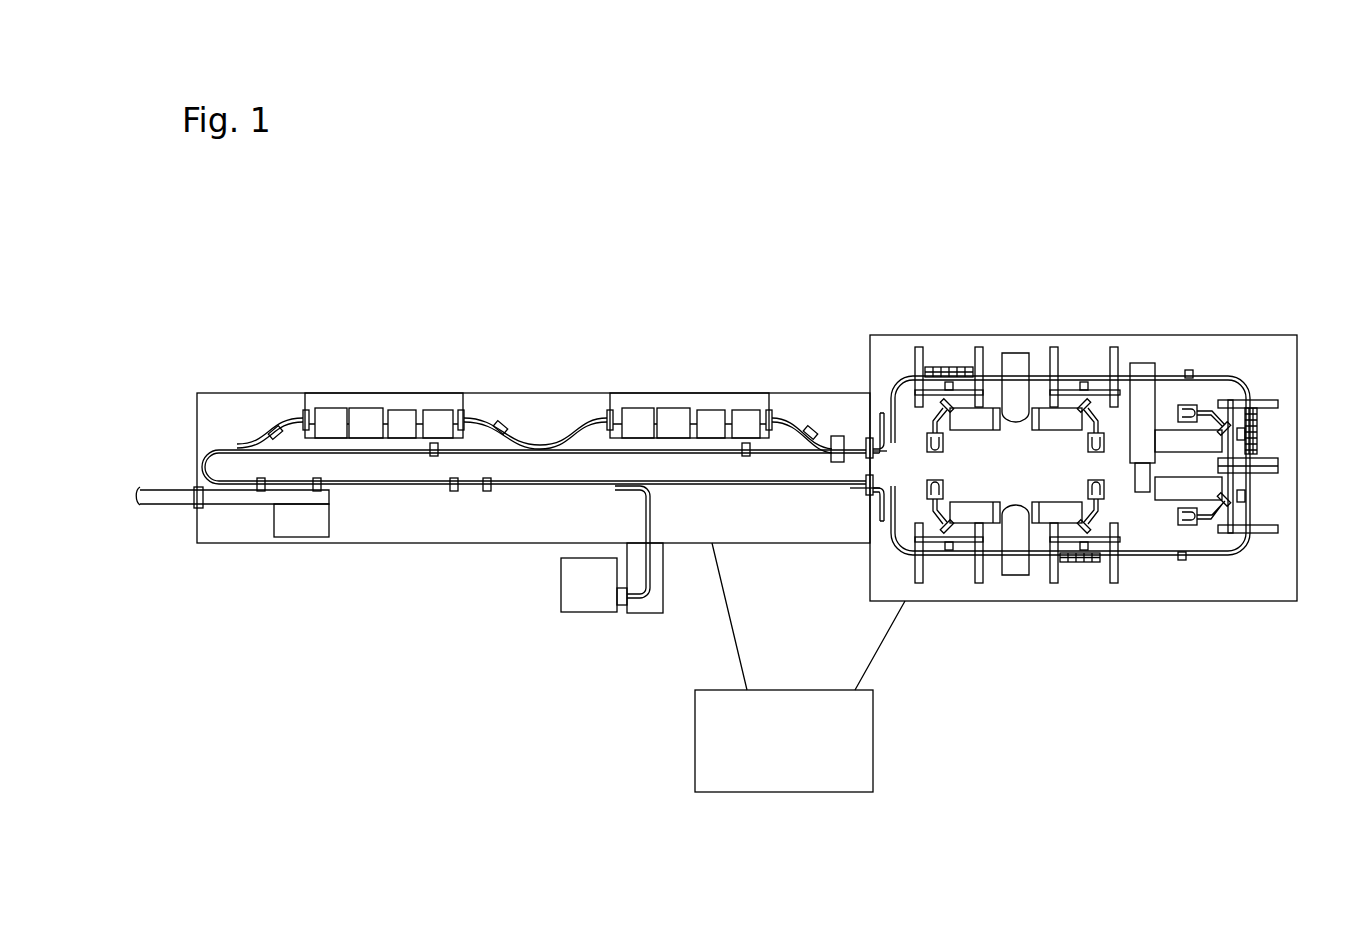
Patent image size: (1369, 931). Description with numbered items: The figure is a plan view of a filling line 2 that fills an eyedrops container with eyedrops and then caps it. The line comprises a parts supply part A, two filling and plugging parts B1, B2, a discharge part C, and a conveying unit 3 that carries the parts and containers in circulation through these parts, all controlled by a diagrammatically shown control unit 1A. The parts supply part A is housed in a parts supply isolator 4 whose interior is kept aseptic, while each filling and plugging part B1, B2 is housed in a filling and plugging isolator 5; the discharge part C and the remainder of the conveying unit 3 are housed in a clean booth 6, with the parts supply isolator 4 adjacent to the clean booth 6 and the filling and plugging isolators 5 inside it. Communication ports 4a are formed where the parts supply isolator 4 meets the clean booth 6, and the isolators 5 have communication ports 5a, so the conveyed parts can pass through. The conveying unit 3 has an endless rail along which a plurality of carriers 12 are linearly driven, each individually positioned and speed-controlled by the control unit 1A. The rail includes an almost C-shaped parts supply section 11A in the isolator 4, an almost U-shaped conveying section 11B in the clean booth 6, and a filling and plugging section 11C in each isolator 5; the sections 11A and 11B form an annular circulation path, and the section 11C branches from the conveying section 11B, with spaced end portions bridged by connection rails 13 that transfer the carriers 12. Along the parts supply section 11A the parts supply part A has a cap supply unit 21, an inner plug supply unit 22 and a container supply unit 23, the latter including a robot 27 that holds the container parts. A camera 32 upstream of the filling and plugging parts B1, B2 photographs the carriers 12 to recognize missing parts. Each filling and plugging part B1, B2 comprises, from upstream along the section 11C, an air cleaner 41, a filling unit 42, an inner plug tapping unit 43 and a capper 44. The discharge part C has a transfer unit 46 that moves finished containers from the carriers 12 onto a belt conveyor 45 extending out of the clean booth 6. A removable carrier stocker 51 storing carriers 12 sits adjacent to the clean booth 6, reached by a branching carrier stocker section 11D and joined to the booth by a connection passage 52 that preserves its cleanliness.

The control unit 1A is at (800, 667).
The filling line 2 is at (781, 299).
The conveying unit 3 is at (744, 491).
The parts supply isolator 4 is at (1231, 335).
The communication port 4a is at (866, 489).
The filling and plugging isolator 5 is at (306, 409).
The communication port 5a is at (301, 416).
The clean booth 6 is at (398, 544).
The parts supply section 11A is at (1160, 554).
The conveying section 11B is at (537, 486).
The filling and plugging section 11C is at (477, 430).
The carrier stocker section 11D is at (664, 516).
The carrier 12 is at (503, 425).
The connection rail 13 is at (262, 437).
The cap supply unit 21 is at (1014, 577).
The inner plug supply unit 22 is at (1284, 466).
The container supply unit 23 is at (1017, 352).
The robot 27 is at (944, 446).
The camera 32 is at (836, 462).
The air cleaner 41 is at (436, 410).
The filling unit 42 is at (401, 410).
The inner plug tapping unit 43 is at (362, 408).
The capper 44 is at (320, 408).
The belt conveyor 45 is at (230, 505).
The transfer unit 46 is at (320, 513).
The carrier stocker 51 is at (586, 613).
The connection passage 52 is at (665, 598).
The parts supply part A is at (1087, 344).
The filling and plugging part B1 is at (693, 392).
The filling and plugging part B2 is at (386, 392).
The discharge part C is at (291, 536).